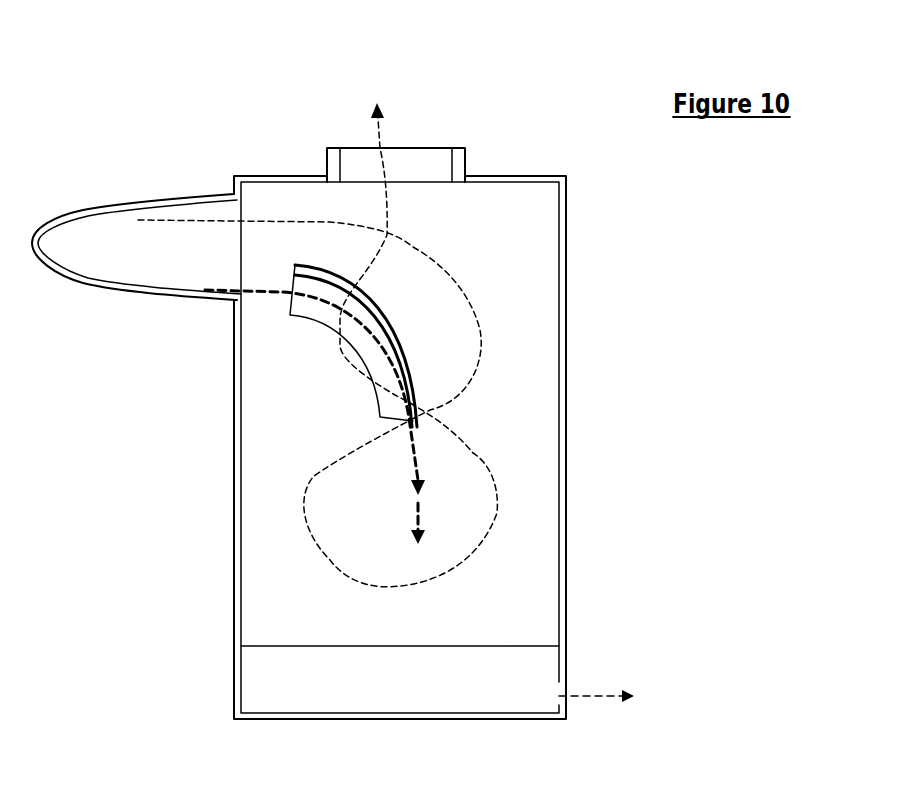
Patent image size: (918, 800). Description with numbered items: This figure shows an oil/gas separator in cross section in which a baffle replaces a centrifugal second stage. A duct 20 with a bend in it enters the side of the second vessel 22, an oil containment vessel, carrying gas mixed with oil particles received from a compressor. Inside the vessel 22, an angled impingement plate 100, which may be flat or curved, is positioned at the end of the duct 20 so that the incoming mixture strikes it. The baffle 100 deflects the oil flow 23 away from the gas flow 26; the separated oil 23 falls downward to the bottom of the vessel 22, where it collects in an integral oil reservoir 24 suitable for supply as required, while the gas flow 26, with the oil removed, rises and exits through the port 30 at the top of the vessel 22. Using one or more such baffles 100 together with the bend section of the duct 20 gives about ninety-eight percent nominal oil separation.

The duct 20 is at (83, 210).
The second vessel 22 is at (233, 538).
The oil flow 23 is at (413, 442).
The oil reservoir 24 is at (265, 680).
The gas flow 26 is at (487, 467).
The port 30 is at (448, 147).
The angled impingement plate 100 is at (383, 300).